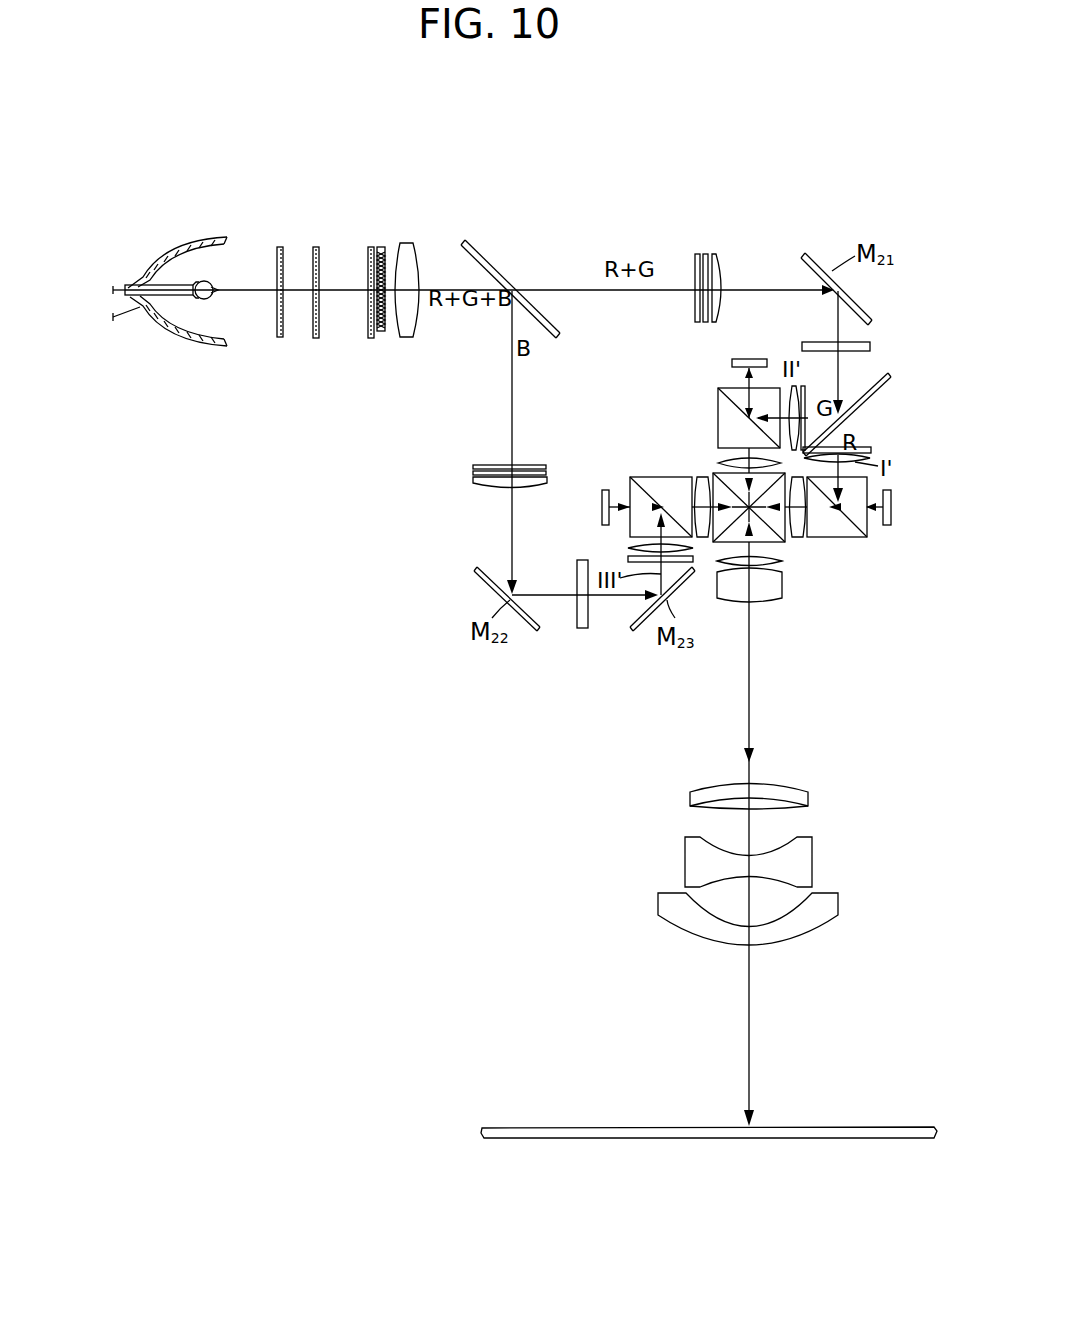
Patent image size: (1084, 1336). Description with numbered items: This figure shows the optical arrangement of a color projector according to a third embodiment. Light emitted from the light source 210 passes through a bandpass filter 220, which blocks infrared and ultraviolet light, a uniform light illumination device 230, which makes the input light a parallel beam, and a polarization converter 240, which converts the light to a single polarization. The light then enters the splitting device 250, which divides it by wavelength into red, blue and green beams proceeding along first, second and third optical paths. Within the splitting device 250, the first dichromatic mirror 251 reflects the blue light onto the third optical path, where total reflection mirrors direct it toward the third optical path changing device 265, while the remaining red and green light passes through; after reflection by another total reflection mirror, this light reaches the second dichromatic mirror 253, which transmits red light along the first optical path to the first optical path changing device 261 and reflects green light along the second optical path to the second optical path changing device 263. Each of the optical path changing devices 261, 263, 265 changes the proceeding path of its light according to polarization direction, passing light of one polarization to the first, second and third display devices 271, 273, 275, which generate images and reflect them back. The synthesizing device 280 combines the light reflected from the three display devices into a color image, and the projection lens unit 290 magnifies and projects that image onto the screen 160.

The light source 210 is at (145, 240).
The bandpass filter 220 is at (279, 337).
The uniform light illumination device 230 is at (375, 237).
The polarization converter 240 is at (383, 244).
The splitting device 250 is at (495, 244).
The first dichromatic mirror 251 is at (505, 276).
The second dichromatic mirror 253 is at (860, 390).
The second optical path changing device 263 is at (772, 394).
The second display device 273 is at (730, 362).
The third display device 275 is at (600, 508).
The third optical path changing device 265 is at (630, 531).
The first optical path changing device 261 is at (867, 536).
The first display device 271 is at (893, 504).
The synthesizing device 280 is at (784, 538).
The projection lens unit 290 is at (824, 832).
The screen 160 is at (522, 1128).